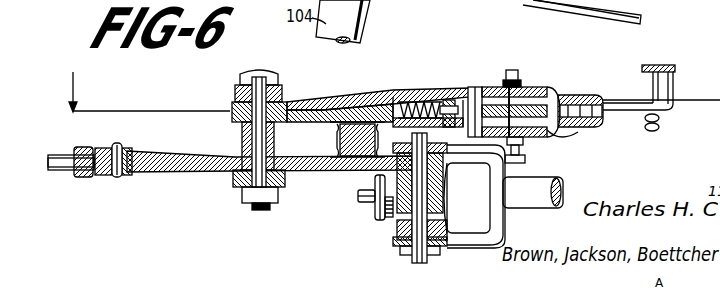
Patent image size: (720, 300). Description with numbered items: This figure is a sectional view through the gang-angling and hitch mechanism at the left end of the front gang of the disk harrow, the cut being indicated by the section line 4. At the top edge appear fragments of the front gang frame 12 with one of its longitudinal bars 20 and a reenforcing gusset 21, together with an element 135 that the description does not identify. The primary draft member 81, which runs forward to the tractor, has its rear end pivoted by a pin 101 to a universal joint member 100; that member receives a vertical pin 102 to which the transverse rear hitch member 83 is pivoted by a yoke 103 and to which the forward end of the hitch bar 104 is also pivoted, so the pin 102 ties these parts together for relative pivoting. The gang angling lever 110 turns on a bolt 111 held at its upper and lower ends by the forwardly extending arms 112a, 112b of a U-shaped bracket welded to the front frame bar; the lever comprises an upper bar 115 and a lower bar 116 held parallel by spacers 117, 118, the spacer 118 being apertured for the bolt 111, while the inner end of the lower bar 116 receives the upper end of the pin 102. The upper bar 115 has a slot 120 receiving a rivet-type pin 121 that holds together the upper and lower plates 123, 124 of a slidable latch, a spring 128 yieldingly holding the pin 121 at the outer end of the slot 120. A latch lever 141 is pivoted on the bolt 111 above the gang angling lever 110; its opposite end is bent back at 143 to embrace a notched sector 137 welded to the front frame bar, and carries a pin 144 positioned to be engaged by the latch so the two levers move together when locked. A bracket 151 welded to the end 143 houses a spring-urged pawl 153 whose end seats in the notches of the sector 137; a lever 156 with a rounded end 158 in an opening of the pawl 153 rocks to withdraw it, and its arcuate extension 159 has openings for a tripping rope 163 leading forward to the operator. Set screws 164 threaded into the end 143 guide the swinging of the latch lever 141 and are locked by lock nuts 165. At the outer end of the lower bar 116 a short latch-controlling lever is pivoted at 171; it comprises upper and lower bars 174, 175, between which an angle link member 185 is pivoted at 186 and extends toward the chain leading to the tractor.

The section line 4 is at (140, 94).
The frame 12 is at (610, 14).
The longitudinal bars 20 is at (361, 27).
The reenforcing gussets 21 is at (368, 8).
The primary draft member 81 is at (378, 230).
The transverse rear hitch member 83 is at (541, 201).
The universal joint member 100 is at (437, 192).
The pin 101 is at (364, 203).
The pin 102 is at (421, 262).
The yoke 103 is at (504, 227).
The hitch bar 104 is at (438, 230).
The gang angling lever 110 is at (297, 180).
The pivot bolt 111 is at (270, 68).
The upper arm of bracket 112a is at (237, 96).
The lower arm of bracket 112b is at (242, 193).
The upper bar 115 is at (336, 130).
The lower bar 116 is at (313, 171).
The spacer 117 is at (348, 145).
The spacer 118 is at (245, 143).
The slot 120 is at (408, 97).
The pin 121 is at (462, 87).
The upper plate 123 is at (425, 87).
The lower plate 124 is at (413, 96).
The spring 128 is at (397, 112).
The member 135 is at (425, 6).
The sector 137 is at (544, 94).
The latch lever 141 is at (360, 82).
The bent-back end portion 143 is at (550, 132).
The pin 144 is at (474, 100).
The bracket 151 is at (596, 103).
The pawl member 153 is at (606, 112).
The lever 156 is at (634, 113).
The rounded end 158 is at (556, 102).
The extension 159 is at (645, 66).
The tripping rope 163 is at (660, 125).
The set screws 164 is at (511, 69).
The lock nuts 165 is at (518, 91).
The pivot 171 is at (130, 153).
The upper bar 174 is at (114, 148).
The lower bar 175 is at (102, 160).
The angle link member 185 is at (60, 160).
The pivot 186 is at (82, 148).